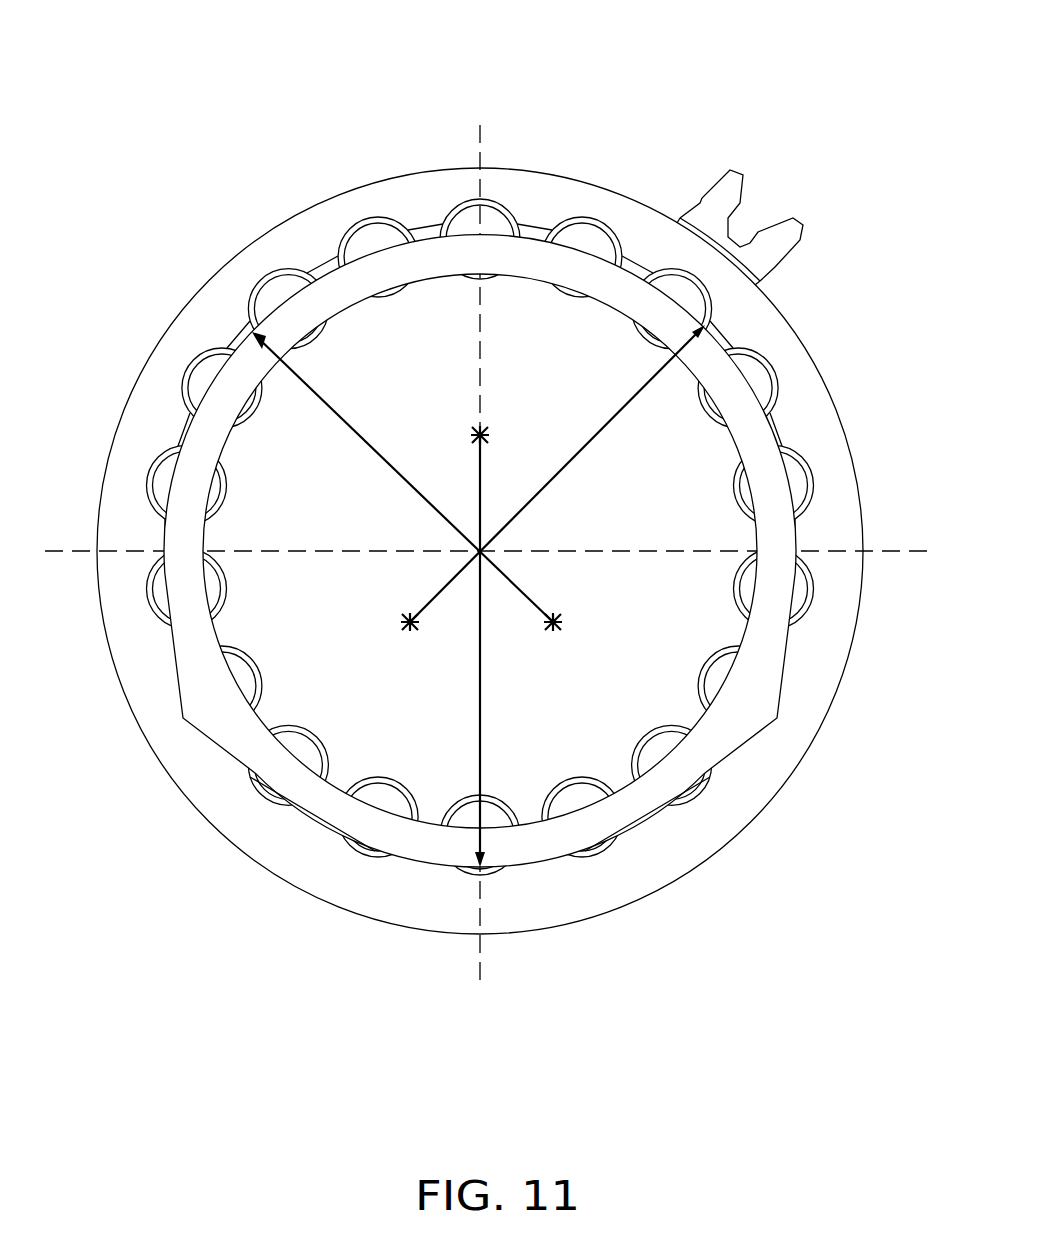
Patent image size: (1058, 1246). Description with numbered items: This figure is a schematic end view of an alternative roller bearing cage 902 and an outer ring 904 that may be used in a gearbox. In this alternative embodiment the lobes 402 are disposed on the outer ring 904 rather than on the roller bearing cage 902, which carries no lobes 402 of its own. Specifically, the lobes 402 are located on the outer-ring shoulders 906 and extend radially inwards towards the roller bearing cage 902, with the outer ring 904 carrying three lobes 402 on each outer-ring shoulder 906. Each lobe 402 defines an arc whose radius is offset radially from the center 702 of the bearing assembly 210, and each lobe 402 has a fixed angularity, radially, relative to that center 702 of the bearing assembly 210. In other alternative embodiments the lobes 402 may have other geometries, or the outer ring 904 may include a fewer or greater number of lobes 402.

The bearing assembly 210 is at (180, 156).
The lobes 402 is at (255, 332).
The center 702 is at (482, 552).
The roller bearing cage 902 is at (752, 684).
The outer ring 904 is at (822, 375).
The outer-ring shoulders 906 is at (806, 430).